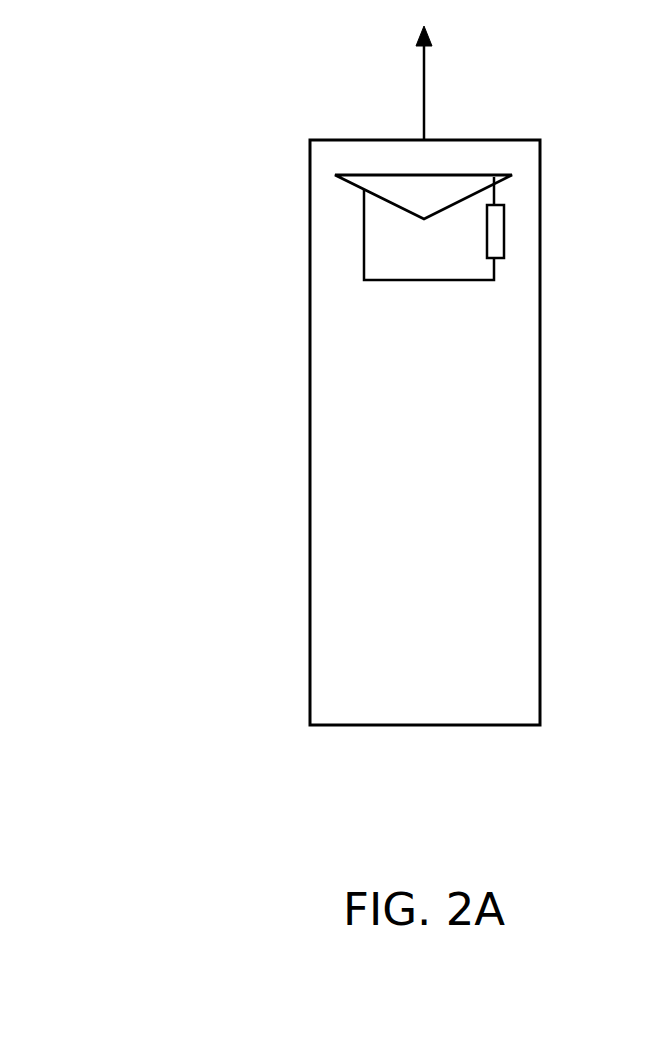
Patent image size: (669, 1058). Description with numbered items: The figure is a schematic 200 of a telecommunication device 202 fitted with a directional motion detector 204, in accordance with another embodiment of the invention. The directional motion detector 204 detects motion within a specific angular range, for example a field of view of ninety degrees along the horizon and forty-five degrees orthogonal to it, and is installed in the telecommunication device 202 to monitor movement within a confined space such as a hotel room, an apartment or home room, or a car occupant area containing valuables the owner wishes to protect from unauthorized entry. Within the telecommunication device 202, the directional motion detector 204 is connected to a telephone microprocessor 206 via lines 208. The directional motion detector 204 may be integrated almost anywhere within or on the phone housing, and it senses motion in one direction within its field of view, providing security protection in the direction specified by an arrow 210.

The schematic 200 is at (252, 86).
The telecommunication device 202 is at (310, 198).
The directional motion detector 204 is at (490, 175).
The telephone microprocessor 206 is at (505, 241).
The lines 208 is at (363, 260).
The arrow 210 is at (424, 106).